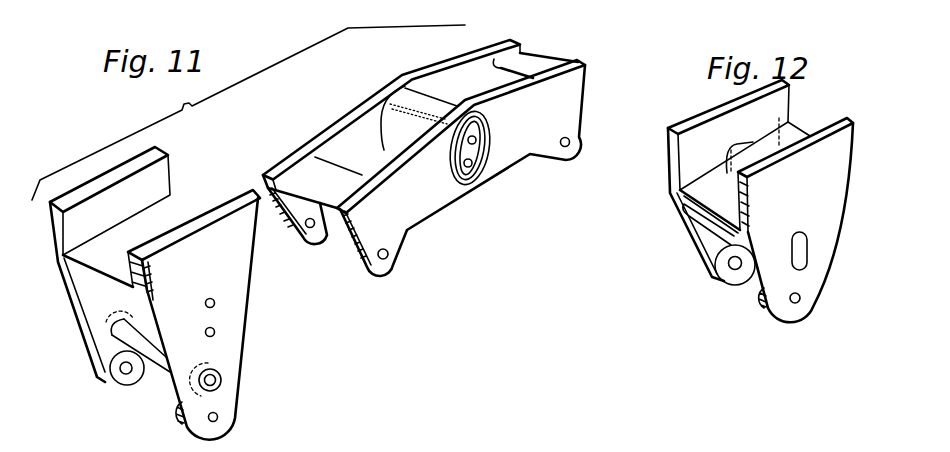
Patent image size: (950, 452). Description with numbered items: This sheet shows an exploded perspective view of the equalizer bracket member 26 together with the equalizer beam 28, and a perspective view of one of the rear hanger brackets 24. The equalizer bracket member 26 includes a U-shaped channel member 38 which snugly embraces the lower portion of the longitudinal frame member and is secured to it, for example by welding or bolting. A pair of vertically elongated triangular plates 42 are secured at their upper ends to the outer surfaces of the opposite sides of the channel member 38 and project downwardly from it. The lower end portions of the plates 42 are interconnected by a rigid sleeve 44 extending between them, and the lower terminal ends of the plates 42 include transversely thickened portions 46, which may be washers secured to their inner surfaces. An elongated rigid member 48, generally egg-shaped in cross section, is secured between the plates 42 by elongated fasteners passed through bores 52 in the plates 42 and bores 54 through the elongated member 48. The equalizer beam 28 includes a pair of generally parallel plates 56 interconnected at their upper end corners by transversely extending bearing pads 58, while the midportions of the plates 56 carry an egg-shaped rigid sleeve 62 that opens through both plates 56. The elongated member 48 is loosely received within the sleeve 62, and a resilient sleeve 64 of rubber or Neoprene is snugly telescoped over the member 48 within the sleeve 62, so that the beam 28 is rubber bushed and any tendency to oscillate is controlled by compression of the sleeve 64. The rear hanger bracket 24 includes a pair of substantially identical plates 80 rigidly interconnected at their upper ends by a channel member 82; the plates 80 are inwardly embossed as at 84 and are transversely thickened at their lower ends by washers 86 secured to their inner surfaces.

In FIG. 12, the rear hanger bracket 24 is at (670, 217).
In FIG. 11, the equalizer bracket member 26 is at (256, 288).
In FIG. 11, the equalizer beam 28 is at (592, 88).
In FIG. 11, the U-shaped channel member 38 is at (183, 211).
In FIG. 11, the triangular plates 42 is at (223, 257).
In FIG. 11, the rigid sleeve 44 is at (157, 357).
In FIG. 11, the transversely thickened portions 46 is at (113, 383).
In FIG. 11, the elongated rigid member 48 is at (476, 139).
In FIG. 11, the bores 52 is at (214, 306).
In FIG. 11, the bores 54 is at (464, 163).
In FIG. 11, the plates 56 is at (530, 156).
In FIG. 11, the bearing pads 58 is at (332, 190).
In FIG. 11, the rigid sleeve 62 is at (399, 133).
In FIG. 11, the resilient sleeve 64 is at (480, 119).
In FIG. 12, the plates 80 is at (672, 152).
In FIG. 12, the channel member 82 is at (693, 183).
In FIG. 12, the inward embossment 84 is at (806, 268).
In FIG. 12, the washers 86 is at (728, 278).